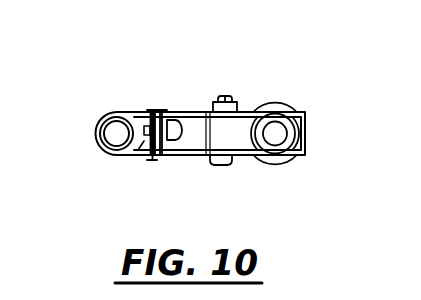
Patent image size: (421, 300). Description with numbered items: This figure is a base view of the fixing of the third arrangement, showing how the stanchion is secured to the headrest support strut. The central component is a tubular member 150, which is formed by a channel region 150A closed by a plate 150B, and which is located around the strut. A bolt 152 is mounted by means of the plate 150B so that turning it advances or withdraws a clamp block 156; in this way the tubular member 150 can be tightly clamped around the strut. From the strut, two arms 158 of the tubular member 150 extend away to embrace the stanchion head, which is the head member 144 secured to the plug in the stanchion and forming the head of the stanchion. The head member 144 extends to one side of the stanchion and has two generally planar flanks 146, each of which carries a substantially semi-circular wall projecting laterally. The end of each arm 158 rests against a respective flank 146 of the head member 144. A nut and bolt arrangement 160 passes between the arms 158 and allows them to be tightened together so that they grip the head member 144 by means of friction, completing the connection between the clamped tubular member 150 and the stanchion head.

The head member 144 is at (250, 141).
The flank 146 is at (252, 110).
The tubular member 150 is at (100, 117).
The channel region 150A is at (102, 169).
The plate 150B is at (153, 109).
The bolt 152 is at (172, 110).
The clamp block 156 is at (142, 150).
The arm 158 is at (206, 110).
The nut and bolt arrangement 160 is at (224, 96).